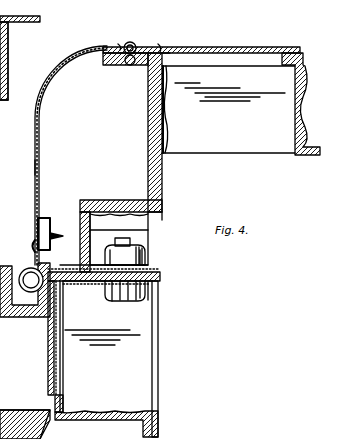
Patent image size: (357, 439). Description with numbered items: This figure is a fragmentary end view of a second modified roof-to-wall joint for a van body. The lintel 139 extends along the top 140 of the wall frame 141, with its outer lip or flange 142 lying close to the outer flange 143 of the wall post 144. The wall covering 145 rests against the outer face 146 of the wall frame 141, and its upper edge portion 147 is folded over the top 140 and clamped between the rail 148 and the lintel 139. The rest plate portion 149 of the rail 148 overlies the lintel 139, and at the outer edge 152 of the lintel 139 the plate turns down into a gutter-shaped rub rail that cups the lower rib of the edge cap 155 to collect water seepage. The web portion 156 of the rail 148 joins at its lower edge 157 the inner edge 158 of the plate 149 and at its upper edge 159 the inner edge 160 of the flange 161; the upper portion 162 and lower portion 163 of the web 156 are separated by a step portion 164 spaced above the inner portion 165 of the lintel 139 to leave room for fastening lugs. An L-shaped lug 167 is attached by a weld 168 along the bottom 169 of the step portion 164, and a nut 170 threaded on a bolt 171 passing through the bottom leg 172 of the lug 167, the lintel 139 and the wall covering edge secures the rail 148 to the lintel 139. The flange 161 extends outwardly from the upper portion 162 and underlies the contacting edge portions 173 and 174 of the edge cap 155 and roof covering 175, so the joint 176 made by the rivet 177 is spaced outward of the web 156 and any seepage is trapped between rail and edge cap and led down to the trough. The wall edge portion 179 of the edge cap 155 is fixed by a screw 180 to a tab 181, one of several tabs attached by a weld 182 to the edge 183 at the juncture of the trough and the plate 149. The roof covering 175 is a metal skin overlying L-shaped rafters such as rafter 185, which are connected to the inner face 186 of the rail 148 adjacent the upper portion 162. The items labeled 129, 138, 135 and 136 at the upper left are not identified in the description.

The upper mounting bar 129 is at (8, 14).
The post 138 is at (8, 36).
The post wall 135 is at (8, 49).
The post wall 136 is at (8, 62).
The edge cap 155 is at (34, 145).
The wall edge portion 179 is at (34, 167).
The roof covering 175 is at (258, 47).
The contacting edge portion 173 is at (118, 44).
The contacting edge portion 174 is at (134, 42).
The joint 176 is at (160, 44).
The inner edge 160 is at (170, 52).
The flange 161 is at (118, 63).
The rivet 177 is at (130, 66).
The web portion 156 is at (148, 165).
The upper edge 159 is at (168, 68).
The upper portion 162 is at (166, 106).
The inner face 186 is at (166, 132).
The rafter 185 is at (258, 158).
The step portion 164 is at (110, 200).
The bottom 169 is at (138, 200).
The rail 148 is at (80, 210).
The weld 168 is at (163, 216).
The lower portion 163 is at (118, 231).
The lower edge 157 is at (108, 252).
The L-shaped lug 167 is at (155, 240).
The nut 170 is at (143, 252).
The bottom leg 172 is at (160, 262).
The rest plate portion 149 is at (74, 263).
The top 140 is at (160, 276).
The lintel 139 is at (160, 292).
The bolt 171 is at (160, 306).
The wall frame 141 is at (160, 319).
The wall post 144 is at (160, 352).
The inner portion 165 is at (120, 284).
The upper edge portion 147 is at (130, 300).
The wall covering 145 is at (46, 355).
The outer flange 142 is at (68, 310).
The edge 183 is at (66, 300).
The inner edge 158 is at (66, 284).
The outer flange 143 is at (64, 360).
The outer face 146 is at (56, 392).
The screw 180 is at (38, 232).
The tab 181 is at (40, 218).
The weld 182 is at (34, 248).
The outer edge 152 is at (28, 268).